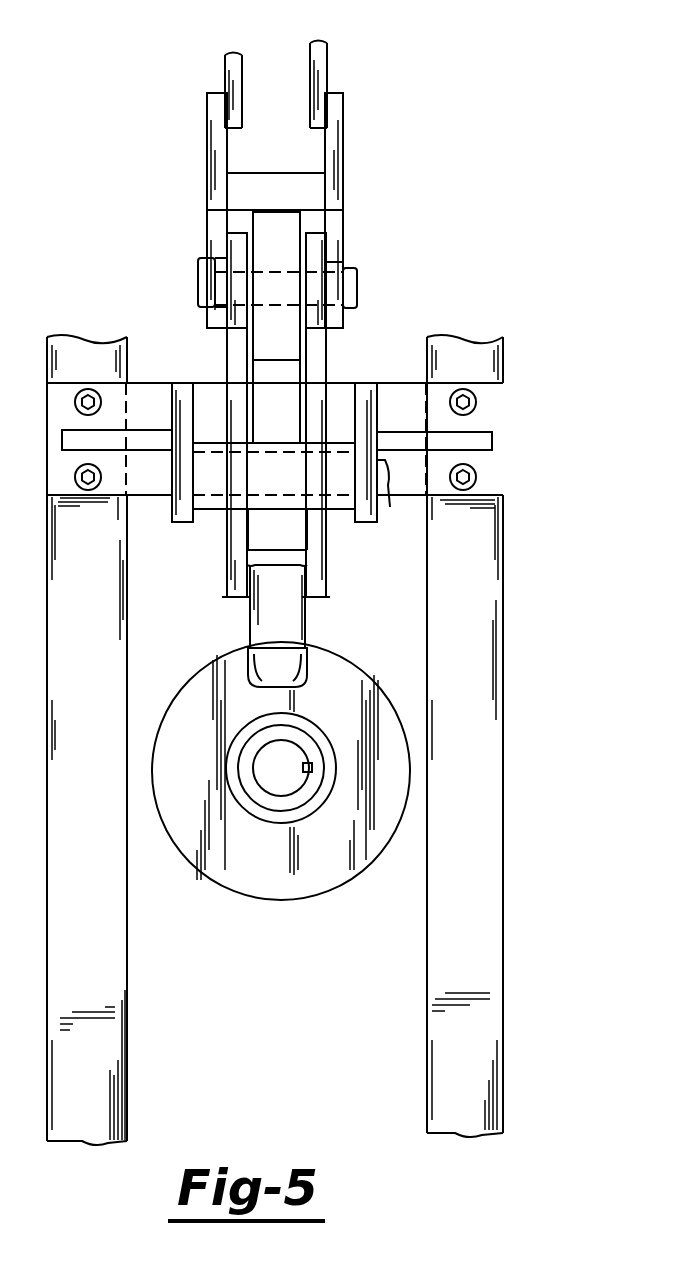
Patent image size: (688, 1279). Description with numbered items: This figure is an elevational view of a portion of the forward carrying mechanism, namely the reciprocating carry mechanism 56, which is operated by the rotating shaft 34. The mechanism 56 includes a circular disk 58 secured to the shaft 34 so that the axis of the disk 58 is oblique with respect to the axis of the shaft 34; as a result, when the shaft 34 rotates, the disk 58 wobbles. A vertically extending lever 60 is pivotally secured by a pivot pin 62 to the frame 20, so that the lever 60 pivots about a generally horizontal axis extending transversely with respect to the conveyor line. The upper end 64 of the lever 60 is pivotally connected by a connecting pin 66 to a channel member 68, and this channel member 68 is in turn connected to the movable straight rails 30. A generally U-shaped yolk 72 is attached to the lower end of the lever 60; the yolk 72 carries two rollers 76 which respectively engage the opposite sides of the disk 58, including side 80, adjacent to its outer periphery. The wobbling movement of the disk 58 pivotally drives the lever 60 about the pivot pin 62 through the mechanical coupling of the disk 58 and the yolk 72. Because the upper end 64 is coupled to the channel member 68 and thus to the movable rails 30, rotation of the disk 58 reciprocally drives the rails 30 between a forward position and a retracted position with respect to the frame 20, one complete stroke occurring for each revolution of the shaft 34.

The frame 20 is at (495, 676).
The movable straight rails 30 is at (242, 78).
The rotating shaft 34 is at (283, 757).
The reciprocating carry mechanism 56 is at (393, 163).
The circular disk 58 is at (275, 866).
The vertically extending lever 60 is at (318, 357).
The pivot pin 62 is at (388, 468).
The upper end of the lever 64 is at (198, 265).
The connecting pin 66 is at (342, 270).
The channel member 68 is at (342, 210).
The yolk 72 is at (308, 628).
The rollers 76 is at (300, 670).
The side of the disk 80 is at (240, 862).